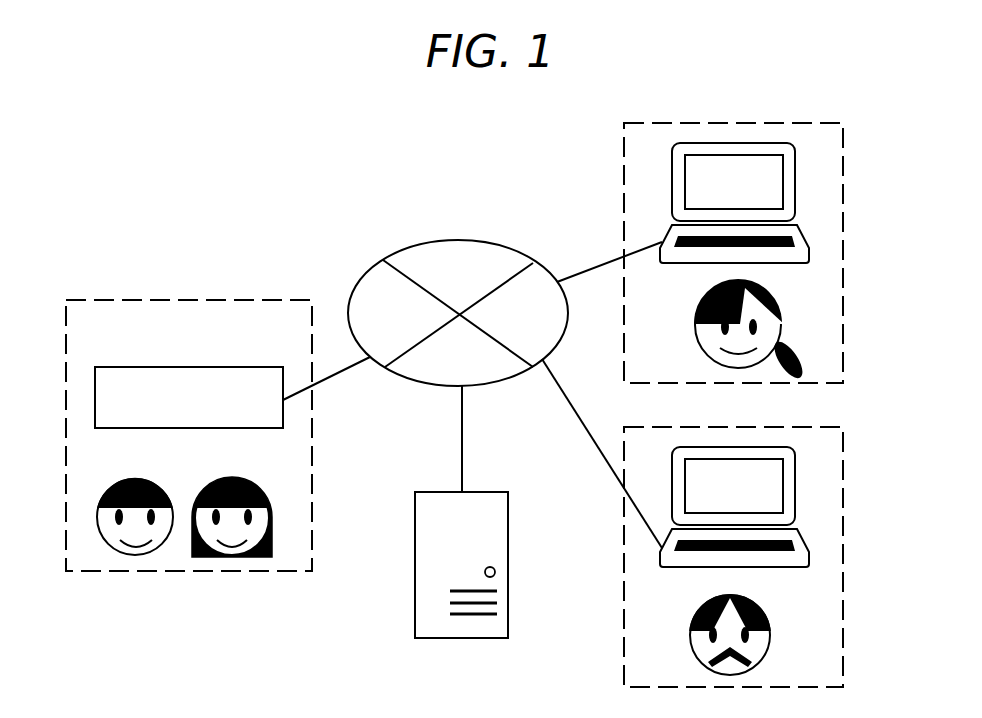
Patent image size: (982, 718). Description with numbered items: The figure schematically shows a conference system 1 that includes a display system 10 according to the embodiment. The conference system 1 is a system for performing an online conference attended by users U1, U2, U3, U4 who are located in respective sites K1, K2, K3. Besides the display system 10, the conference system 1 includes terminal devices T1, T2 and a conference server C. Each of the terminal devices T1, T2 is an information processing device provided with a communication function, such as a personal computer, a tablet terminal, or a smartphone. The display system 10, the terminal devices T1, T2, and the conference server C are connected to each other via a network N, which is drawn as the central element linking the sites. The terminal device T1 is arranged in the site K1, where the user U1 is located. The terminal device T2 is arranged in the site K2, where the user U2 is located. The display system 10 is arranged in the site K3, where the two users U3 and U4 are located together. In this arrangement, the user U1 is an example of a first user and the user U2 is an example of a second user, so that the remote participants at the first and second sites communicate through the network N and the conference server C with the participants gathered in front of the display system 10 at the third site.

The conference system 1 is at (320, 196).
The network N is at (494, 242).
The conference server C is at (503, 527).
The display system 10 is at (200, 367).
The site K1 is at (850, 345).
The site K2 is at (850, 650).
The site K3 is at (251, 298).
The terminal device T1 is at (716, 149).
The terminal device T2 is at (716, 453).
The user U1 is at (700, 303).
The user U2 is at (700, 608).
The user U3 is at (125, 478).
The user U4 is at (220, 477).